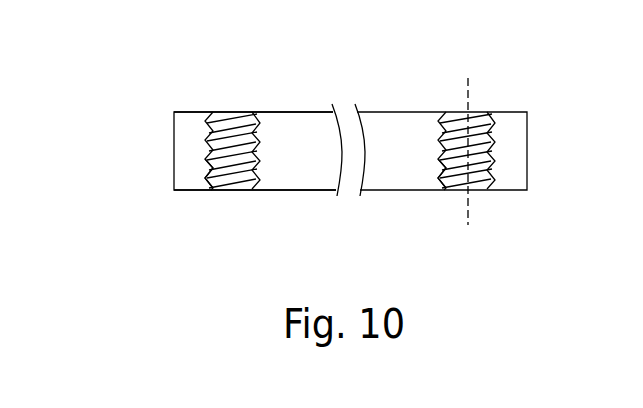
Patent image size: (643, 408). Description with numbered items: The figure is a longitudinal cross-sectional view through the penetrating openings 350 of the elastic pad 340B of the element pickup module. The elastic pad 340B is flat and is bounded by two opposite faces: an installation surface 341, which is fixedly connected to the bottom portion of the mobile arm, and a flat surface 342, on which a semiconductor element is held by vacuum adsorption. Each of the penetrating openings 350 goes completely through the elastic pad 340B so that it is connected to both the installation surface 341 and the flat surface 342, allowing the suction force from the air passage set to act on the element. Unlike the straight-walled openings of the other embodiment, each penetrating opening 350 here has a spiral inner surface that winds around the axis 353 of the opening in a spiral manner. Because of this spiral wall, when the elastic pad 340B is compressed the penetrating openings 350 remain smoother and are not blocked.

The elastic pad 340B is at (539, 100).
The installation surface 341 is at (192, 190).
The flat surface 342 is at (193, 112).
The penetrating openings 350 is at (242, 93).
The axis 353 is at (470, 205).